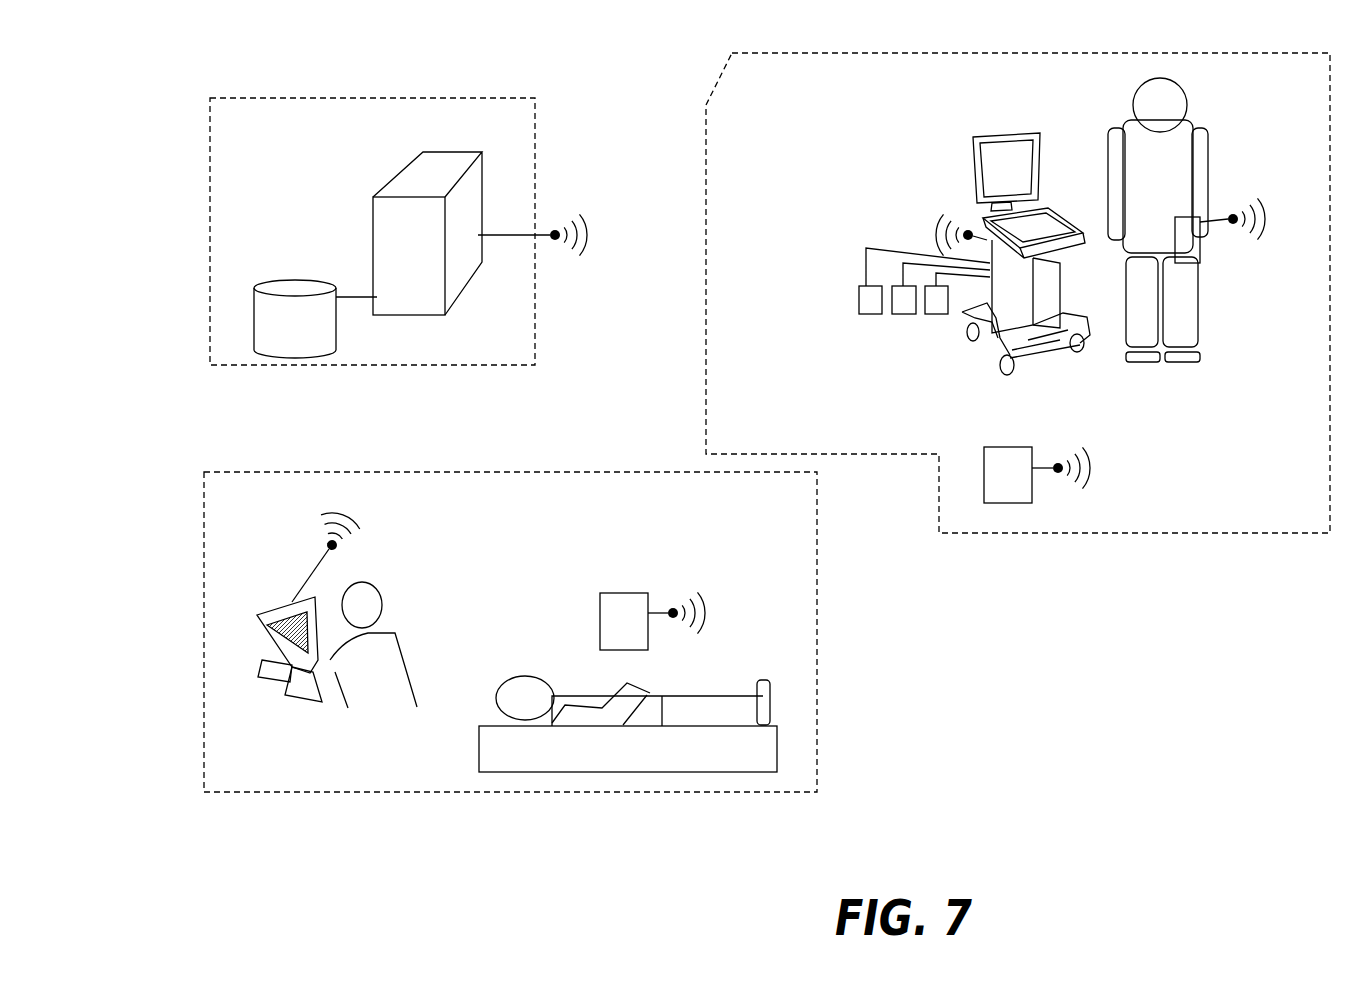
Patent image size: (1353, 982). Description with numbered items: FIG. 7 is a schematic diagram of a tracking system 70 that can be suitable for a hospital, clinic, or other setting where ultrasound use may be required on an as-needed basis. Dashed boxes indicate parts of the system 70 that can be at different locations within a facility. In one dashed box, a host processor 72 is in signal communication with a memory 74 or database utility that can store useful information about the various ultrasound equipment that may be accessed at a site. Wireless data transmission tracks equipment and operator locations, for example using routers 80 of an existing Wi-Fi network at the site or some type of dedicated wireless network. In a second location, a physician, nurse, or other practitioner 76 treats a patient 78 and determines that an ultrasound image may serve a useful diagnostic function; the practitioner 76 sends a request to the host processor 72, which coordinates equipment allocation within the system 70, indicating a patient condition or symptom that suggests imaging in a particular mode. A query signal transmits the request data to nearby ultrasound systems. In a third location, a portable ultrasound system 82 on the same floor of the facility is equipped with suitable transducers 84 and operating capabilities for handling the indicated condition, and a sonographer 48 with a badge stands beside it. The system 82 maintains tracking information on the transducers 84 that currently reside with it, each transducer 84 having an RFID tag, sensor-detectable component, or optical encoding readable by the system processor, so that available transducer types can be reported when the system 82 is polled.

The tracking system 70 is at (615, 116).
The host processor 72 is at (424, 259).
The memory 74 is at (302, 333).
The practitioner 76 is at (390, 692).
The patient 78 is at (715, 707).
The router 80 is at (1022, 489).
The portable ultrasound system 82 is at (977, 180).
The transducers 84 is at (848, 344).
The sonographer 48 is at (1170, 184).